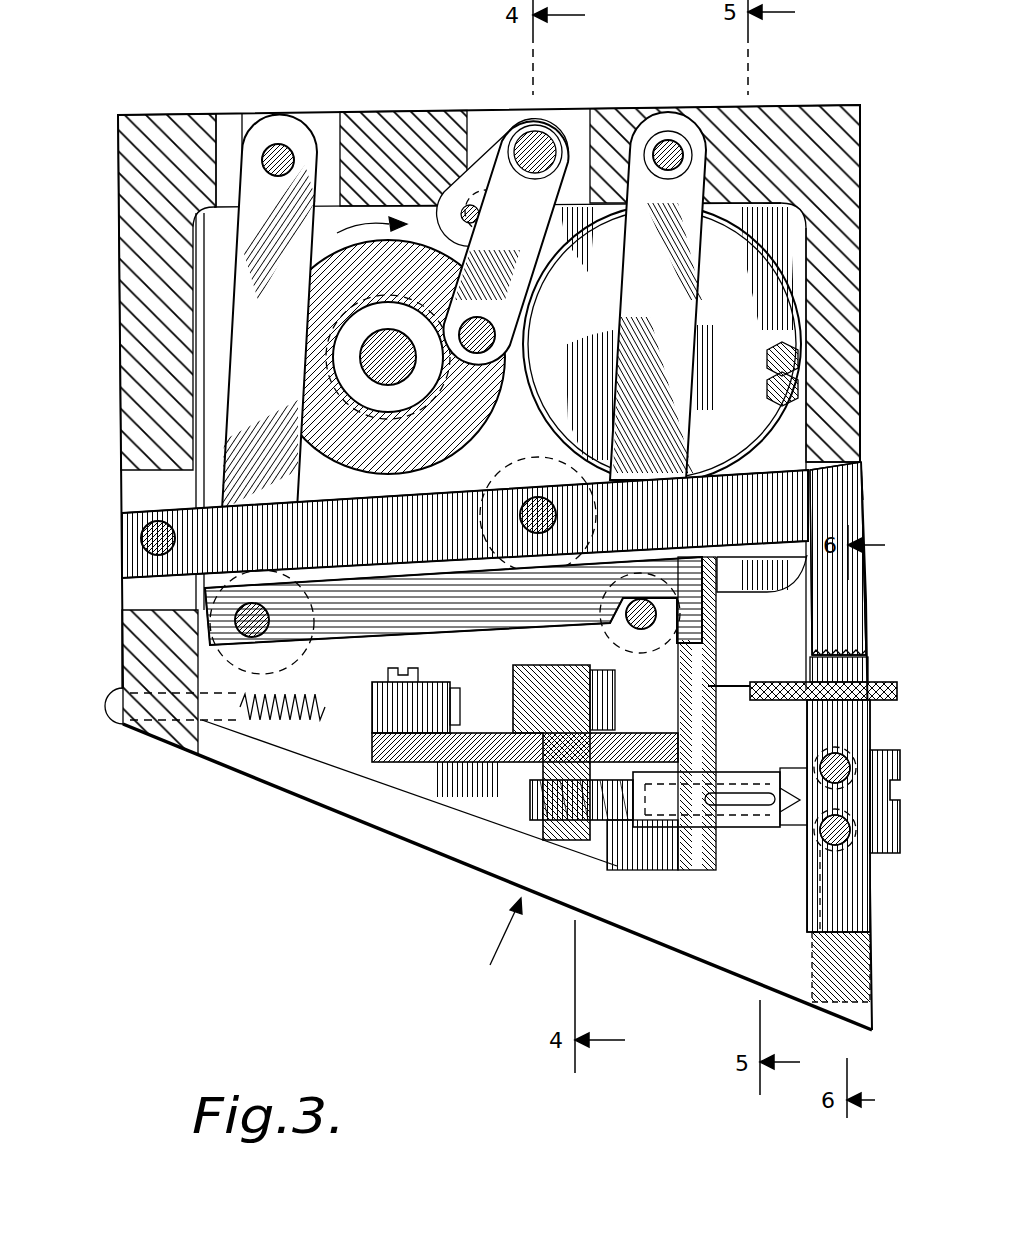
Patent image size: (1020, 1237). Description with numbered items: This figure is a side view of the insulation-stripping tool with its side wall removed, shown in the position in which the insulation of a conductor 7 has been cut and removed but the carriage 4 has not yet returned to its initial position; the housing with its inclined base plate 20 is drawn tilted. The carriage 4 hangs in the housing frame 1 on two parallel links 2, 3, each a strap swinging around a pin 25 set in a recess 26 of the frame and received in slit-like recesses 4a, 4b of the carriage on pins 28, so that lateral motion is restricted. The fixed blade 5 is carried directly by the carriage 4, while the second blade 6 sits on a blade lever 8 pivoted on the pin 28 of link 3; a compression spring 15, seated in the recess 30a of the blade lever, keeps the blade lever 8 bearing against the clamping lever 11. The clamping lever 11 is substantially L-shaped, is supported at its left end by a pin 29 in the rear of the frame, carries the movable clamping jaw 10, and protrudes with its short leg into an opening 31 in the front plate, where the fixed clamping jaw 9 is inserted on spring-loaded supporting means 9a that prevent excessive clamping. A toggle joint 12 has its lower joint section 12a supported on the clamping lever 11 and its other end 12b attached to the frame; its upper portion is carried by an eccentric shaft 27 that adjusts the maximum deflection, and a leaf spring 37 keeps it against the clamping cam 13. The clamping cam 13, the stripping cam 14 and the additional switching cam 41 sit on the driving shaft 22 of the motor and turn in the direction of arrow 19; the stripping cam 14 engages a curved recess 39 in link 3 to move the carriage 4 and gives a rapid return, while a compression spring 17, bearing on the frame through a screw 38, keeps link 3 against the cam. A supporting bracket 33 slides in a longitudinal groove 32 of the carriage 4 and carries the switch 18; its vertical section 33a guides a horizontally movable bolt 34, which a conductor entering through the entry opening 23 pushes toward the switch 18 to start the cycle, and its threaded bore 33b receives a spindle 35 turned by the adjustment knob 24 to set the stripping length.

The housing frame 1 is at (845, 262).
The parallel link 2 is at (660, 318).
The parallel link 3 is at (305, 342).
The carriage 4 is at (473, 820).
The slit-like recess 4a is at (377, 600).
The slit-like recess 4b is at (508, 603).
The blade 5 is at (757, 730).
The blade 6 is at (717, 640).
The conductor 7 is at (888, 672).
The blade lever 8 is at (443, 713).
The clamping jaw 9 is at (833, 735).
The spring-loaded supporting means 9a is at (867, 947).
The clamping jaw 10 is at (833, 590).
The clamping lever 11 is at (770, 510).
The toggle joint 12 is at (492, 147).
The lower joint section 12a is at (577, 497).
The end of toggle joint 12b is at (570, 124).
The clamping cam 13 is at (330, 412).
The stripping cam 14 is at (350, 230).
The compression spring 15 is at (300, 717).
The compression spring 17 is at (317, 720).
The switch 18 is at (463, 787).
The arrow 19 is at (392, 222).
The base plate 20 is at (488, 943).
The driving shaft 22 is at (367, 357).
The entry opening 23 is at (874, 665).
The adjustment knob 24 is at (890, 820).
The pin 25 is at (311, 122).
The recess 26 is at (228, 120).
The eccentric shaft 27 is at (545, 125).
The pin 28 is at (657, 597).
The pin 29 is at (140, 540).
The pivot pin 30a is at (313, 623).
The opening 31 is at (875, 459).
The longitudinal groove 32 is at (350, 750).
The supporting bracket 33 is at (513, 820).
The vertical section 33a is at (597, 717).
The bore 33b is at (593, 870).
The bolt 34 is at (613, 683).
The spindle 35 is at (557, 830).
The leaf spring 37 is at (770, 245).
The screw 38 is at (170, 712).
The curved recess 39 is at (290, 310).
The switching cam 41 is at (350, 378).